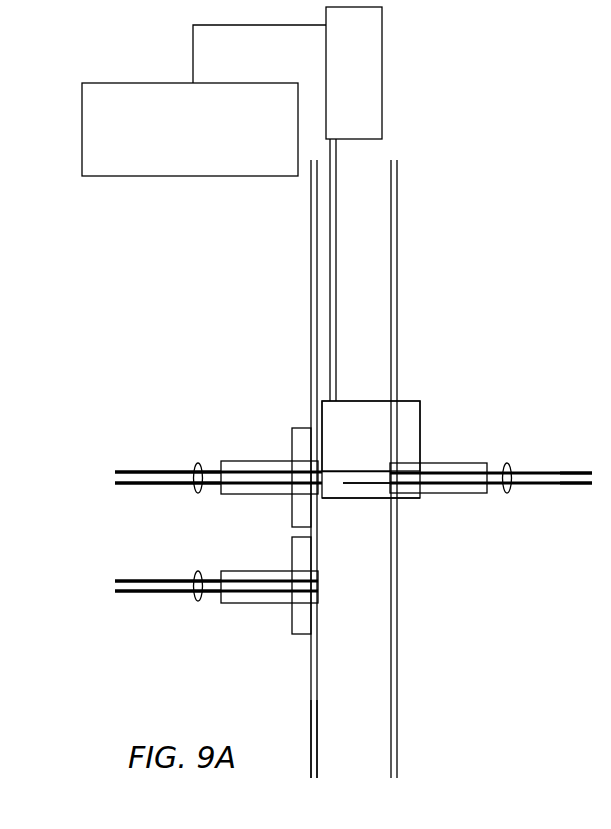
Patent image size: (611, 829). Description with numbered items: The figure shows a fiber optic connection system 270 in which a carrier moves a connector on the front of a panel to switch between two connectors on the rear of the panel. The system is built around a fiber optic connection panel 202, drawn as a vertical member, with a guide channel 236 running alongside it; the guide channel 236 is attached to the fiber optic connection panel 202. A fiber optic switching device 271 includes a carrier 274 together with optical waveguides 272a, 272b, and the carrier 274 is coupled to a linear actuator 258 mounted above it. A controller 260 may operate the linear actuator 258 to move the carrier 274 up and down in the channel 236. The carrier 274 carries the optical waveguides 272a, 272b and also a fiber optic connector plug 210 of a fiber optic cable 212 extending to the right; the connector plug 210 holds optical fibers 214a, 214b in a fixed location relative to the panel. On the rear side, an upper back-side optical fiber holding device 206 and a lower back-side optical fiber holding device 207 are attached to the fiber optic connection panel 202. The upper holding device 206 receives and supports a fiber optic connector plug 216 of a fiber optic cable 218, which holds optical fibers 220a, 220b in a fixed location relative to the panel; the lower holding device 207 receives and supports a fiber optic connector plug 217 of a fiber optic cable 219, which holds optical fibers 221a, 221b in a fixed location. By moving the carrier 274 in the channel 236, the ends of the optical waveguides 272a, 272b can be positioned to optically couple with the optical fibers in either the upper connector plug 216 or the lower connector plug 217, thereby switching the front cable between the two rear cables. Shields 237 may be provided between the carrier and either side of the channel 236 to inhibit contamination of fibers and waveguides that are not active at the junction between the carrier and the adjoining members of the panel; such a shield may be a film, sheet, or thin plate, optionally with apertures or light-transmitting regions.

The linear actuator 258 is at (369, 84).
The controller 260 is at (283, 172).
The fiber optic connection system 270 is at (473, 132).
The guide channel 236 is at (304, 217).
The shields 237 is at (317, 745).
The fiber optic connection panel 202 is at (397, 235).
The carrier 274 is at (356, 401).
The fiber optic switching device 271 is at (424, 386).
The optical waveguide 272a is at (353, 469).
The optical waveguide 272b is at (352, 500).
The fiber optic connector plug 210 is at (455, 495).
The optical fiber 214a is at (558, 470).
The optical fiber 214b is at (536, 488).
The fiber optic cable 212 is at (572, 495).
The fiber optic cable 218 is at (103, 478).
The optical fiber 220a is at (145, 468).
The optical fiber 220b is at (155, 487).
The fiber optic connector plug 216 is at (254, 459).
The upper back-side optical fiber holding device 206 is at (290, 508).
The fiber optic cable 219 is at (103, 587).
The optical fiber 221a is at (145, 577).
The optical fiber 221b is at (155, 596).
The fiber optic connector plug 217 is at (264, 576).
The lower back-side optical fiber holding device 207 is at (290, 619).